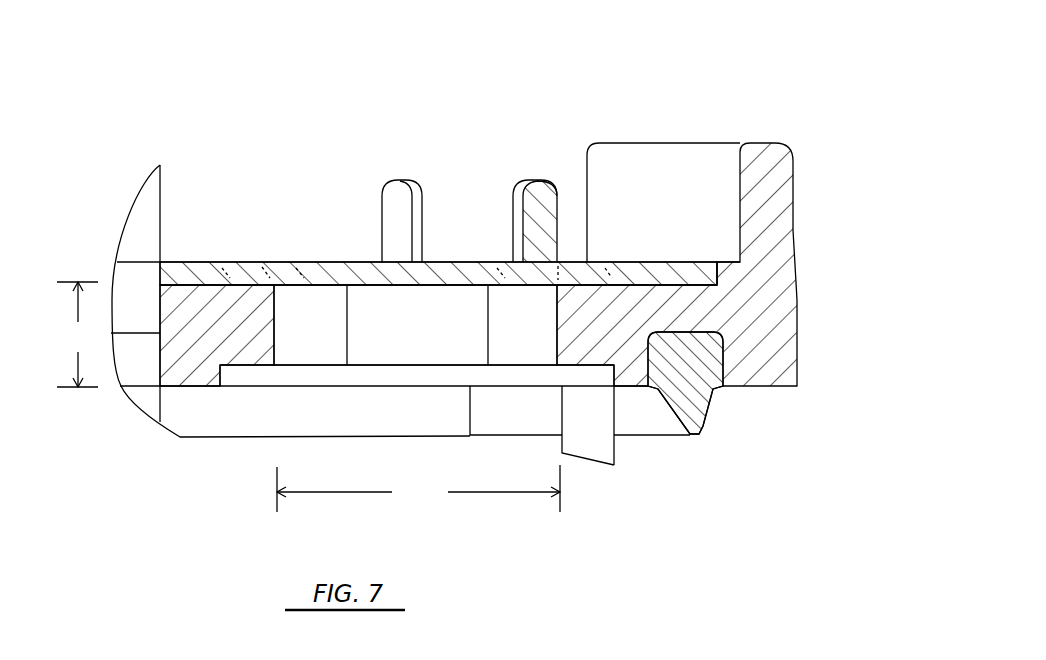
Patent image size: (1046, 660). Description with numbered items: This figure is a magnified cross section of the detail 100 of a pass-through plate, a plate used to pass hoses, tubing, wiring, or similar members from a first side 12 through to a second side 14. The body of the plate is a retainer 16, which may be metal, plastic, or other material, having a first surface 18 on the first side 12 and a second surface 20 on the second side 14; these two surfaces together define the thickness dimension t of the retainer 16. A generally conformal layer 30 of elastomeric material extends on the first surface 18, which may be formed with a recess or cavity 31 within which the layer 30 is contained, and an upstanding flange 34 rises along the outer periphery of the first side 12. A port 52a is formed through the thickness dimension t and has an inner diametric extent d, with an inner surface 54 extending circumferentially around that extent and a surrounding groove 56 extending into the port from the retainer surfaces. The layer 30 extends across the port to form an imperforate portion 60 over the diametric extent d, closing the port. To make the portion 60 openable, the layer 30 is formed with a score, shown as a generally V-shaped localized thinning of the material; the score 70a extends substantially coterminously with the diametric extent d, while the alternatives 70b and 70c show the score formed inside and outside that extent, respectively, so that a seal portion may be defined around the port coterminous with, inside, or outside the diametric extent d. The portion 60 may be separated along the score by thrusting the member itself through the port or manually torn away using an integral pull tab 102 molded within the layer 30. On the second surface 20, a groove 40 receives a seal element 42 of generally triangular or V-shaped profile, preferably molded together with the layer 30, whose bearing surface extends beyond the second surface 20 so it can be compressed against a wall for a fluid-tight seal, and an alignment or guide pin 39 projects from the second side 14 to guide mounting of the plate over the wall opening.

The detail 100 is at (645, 62).
The first side 12 is at (298, 158).
The second side 14 is at (256, 466).
The retainer 16 is at (797, 330).
The first surface 18 is at (178, 283).
The second surface 20 is at (192, 388).
The layer 30 is at (657, 260).
The recess or cavity 31 is at (707, 266).
The flange 34 is at (720, 142).
The alignment or guide pin 39 is at (607, 466).
The groove 40 is at (720, 363).
The seal element 42 is at (660, 437).
The port 52a is at (434, 303).
The inner surface 54 is at (273, 328).
The groove 56 is at (520, 370).
The imperforate portion 60 is at (392, 208).
The score 70a is at (263, 270).
The score 70b is at (296, 268).
The score 70c is at (224, 268).
The pull tab 102 is at (533, 180).
The thickness dimension t is at (77, 334).
The inner diametric extent d is at (418, 488).